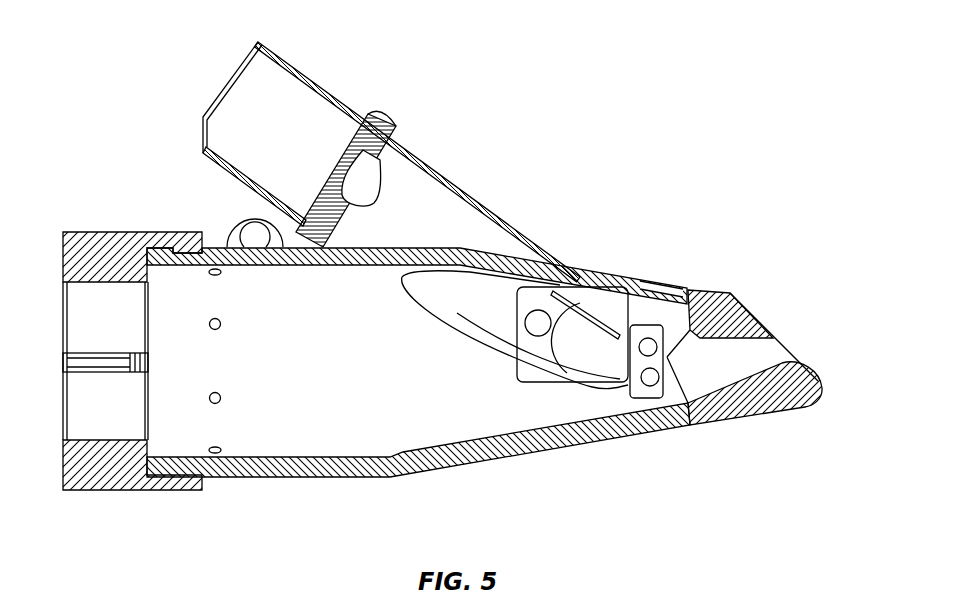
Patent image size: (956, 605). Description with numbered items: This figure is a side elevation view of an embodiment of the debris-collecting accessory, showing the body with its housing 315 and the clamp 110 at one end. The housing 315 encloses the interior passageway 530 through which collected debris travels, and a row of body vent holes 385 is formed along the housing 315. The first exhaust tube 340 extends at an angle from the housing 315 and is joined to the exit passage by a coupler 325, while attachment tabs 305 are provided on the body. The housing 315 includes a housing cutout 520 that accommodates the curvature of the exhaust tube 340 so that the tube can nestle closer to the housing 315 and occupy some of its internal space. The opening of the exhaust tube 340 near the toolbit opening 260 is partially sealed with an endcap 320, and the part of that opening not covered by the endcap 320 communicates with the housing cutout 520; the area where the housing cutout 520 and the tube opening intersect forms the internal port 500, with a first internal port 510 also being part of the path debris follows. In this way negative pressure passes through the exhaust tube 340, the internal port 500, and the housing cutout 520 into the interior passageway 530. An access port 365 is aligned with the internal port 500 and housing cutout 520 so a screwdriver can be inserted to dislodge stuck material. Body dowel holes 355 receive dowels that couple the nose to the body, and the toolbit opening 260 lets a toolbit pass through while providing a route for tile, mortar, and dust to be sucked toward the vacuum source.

The clamp 110 is at (150, 203).
The attachment tabs 305 is at (233, 230).
The coupler 325 is at (392, 143).
The first internal port 510 is at (363, 188).
The first exhaust tube 340 is at (432, 202).
The housing cutout 520 is at (463, 323).
The access port 365 is at (540, 312).
The internal port 500 is at (598, 352).
The endcap 320 is at (650, 343).
The body dowel holes 355 is at (727, 294).
The toolbit opening 260 is at (745, 355).
The interior passageway 530 is at (400, 390).
The housing 315 is at (355, 477).
The body vent holes 385 is at (216, 403).